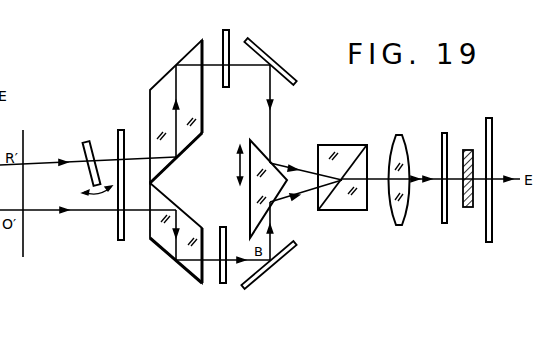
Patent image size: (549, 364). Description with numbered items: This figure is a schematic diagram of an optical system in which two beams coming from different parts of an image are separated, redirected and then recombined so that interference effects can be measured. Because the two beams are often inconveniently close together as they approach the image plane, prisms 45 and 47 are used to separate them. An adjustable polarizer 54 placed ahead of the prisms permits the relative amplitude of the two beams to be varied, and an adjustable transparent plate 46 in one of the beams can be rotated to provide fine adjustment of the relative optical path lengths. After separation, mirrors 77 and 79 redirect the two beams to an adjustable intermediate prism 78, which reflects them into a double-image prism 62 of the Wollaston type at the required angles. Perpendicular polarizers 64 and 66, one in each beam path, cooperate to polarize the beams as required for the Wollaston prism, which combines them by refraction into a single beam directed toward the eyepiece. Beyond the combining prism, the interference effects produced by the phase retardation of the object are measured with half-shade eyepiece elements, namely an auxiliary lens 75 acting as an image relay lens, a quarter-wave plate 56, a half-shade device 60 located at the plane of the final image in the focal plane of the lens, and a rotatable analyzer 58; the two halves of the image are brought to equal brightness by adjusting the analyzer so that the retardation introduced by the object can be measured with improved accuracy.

The prism 45 is at (163, 92).
The adjustable transparent plate 46 is at (82, 148).
The prism 47 is at (158, 246).
The adjustable polarizer 54 is at (117, 143).
The quarter-wave plate 56 is at (446, 226).
The analyzer 58 is at (494, 232).
The half-shade device 60 is at (468, 210).
The double-image prism 62 is at (324, 145).
The polarizer 64 is at (222, 45).
The polarizer 66 is at (225, 284).
The auxiliary lens 75 is at (392, 212).
The mirror 77 is at (290, 71).
The adjustable intermediate prism 78 is at (250, 201).
The mirror 79 is at (257, 285).